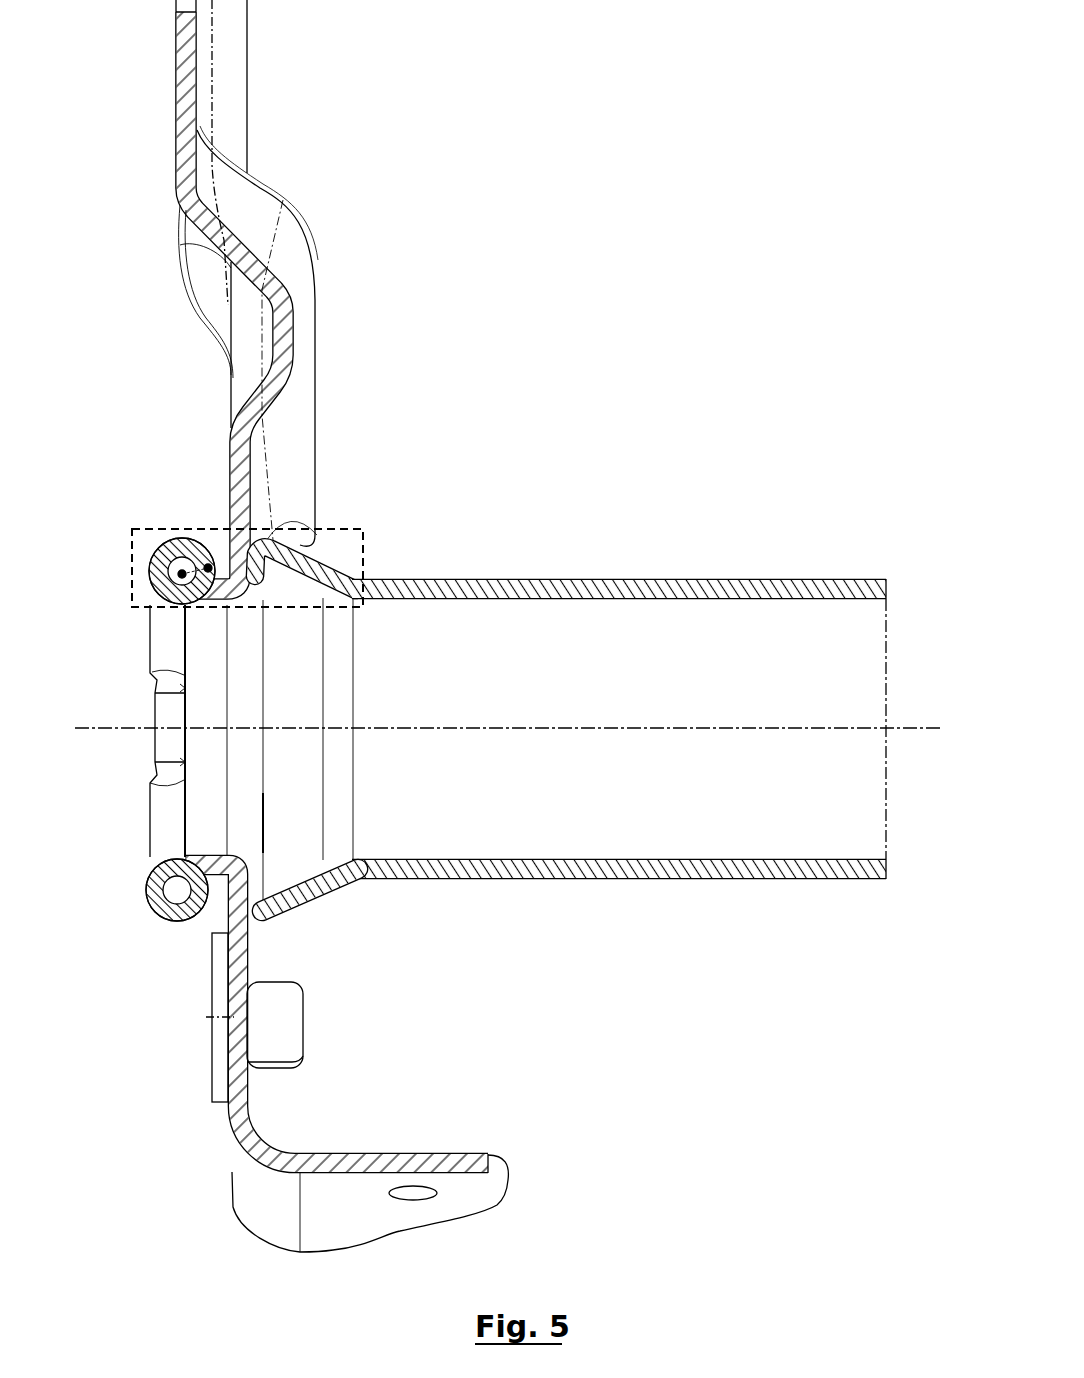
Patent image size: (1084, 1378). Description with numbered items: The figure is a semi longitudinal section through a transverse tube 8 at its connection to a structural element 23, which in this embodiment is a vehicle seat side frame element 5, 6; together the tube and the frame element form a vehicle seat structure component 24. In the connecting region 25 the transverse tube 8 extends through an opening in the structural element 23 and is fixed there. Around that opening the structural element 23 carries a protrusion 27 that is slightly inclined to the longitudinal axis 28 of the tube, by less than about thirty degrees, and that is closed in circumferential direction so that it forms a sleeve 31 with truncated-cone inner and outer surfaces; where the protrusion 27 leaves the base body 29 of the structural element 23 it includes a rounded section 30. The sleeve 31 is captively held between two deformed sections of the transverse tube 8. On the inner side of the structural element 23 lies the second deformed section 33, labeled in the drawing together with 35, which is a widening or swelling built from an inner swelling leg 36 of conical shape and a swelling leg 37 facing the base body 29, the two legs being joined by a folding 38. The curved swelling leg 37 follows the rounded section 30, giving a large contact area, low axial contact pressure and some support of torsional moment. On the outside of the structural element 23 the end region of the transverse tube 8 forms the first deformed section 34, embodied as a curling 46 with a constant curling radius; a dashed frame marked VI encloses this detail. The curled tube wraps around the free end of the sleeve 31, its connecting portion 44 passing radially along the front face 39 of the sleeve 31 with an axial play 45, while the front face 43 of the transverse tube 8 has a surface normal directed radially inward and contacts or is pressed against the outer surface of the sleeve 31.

The vehicle seat side frame element 5 is at (181, 294).
The vehicle seat side frame element 6 is at (181, 294).
The structural element 23 is at (248, 378).
The vehicle seat structure component 24 is at (630, 135).
The connecting region 25 is at (198, 927).
The protrusion 27 is at (164, 516).
The longitudinal axis 28 is at (696, 732).
The base body 29 is at (237, 448).
The rounded section 30 is at (208, 564).
The sleeve 31 is at (182, 570).
The second deformed section 33 is at (366, 536).
The first deformed section 34 is at (134, 579).
The flange 35 is at (314, 538).
The inner swelling leg 36 is at (305, 568).
The swelling leg 37 is at (245, 580).
The folding 38 is at (263, 542).
The front face 39 is at (178, 590).
The front face 43 is at (195, 590).
The connecting portion 44 is at (163, 552).
The axial play 45 is at (177, 885).
The curling 46 is at (145, 526).
The transverse tube 8 is at (783, 580).
The detail view marker VI is at (140, 610).